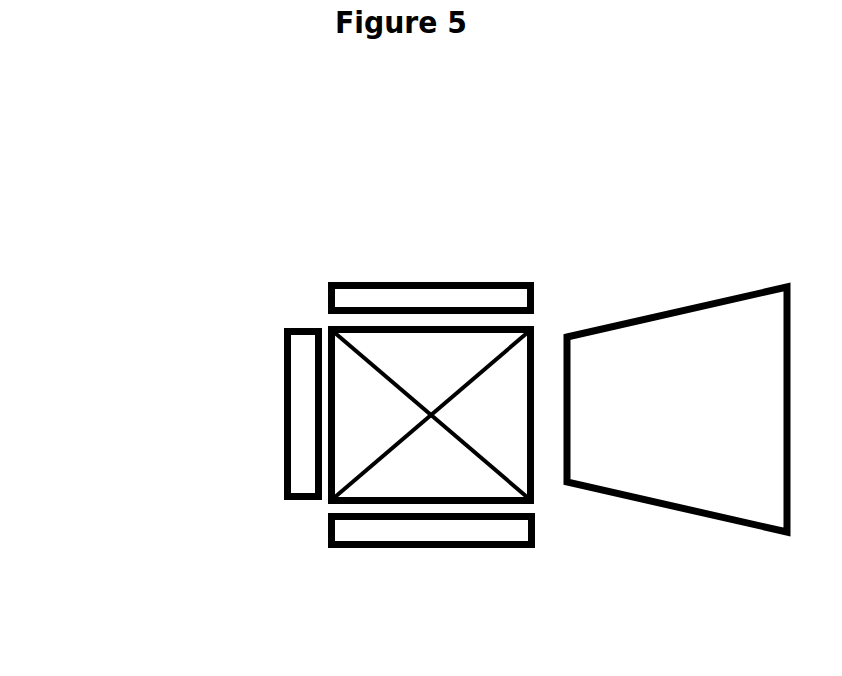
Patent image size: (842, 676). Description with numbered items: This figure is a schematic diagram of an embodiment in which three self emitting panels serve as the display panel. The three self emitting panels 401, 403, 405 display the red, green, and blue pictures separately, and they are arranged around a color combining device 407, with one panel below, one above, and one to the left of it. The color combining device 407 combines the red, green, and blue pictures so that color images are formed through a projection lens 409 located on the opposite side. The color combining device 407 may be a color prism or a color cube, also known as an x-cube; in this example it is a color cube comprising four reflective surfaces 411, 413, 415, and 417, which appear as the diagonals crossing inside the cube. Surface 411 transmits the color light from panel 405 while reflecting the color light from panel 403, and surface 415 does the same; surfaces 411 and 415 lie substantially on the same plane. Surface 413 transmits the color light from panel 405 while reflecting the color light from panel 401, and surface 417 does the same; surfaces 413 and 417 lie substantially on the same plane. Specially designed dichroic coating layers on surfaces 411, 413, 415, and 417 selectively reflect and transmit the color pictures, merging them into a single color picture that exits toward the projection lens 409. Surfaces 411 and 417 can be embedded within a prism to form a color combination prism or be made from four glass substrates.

The self emitting panel 401 is at (429, 570).
The self emitting panel 403 is at (428, 258).
The self emitting panel 405 is at (262, 408).
The color combining device 407 is at (549, 503).
The projection lens 409 is at (677, 409).
The reflective surface 411 is at (366, 375).
The reflective surface 413 is at (464, 363).
The reflective surface 415 is at (438, 448).
The reflective surface 417 is at (346, 476).